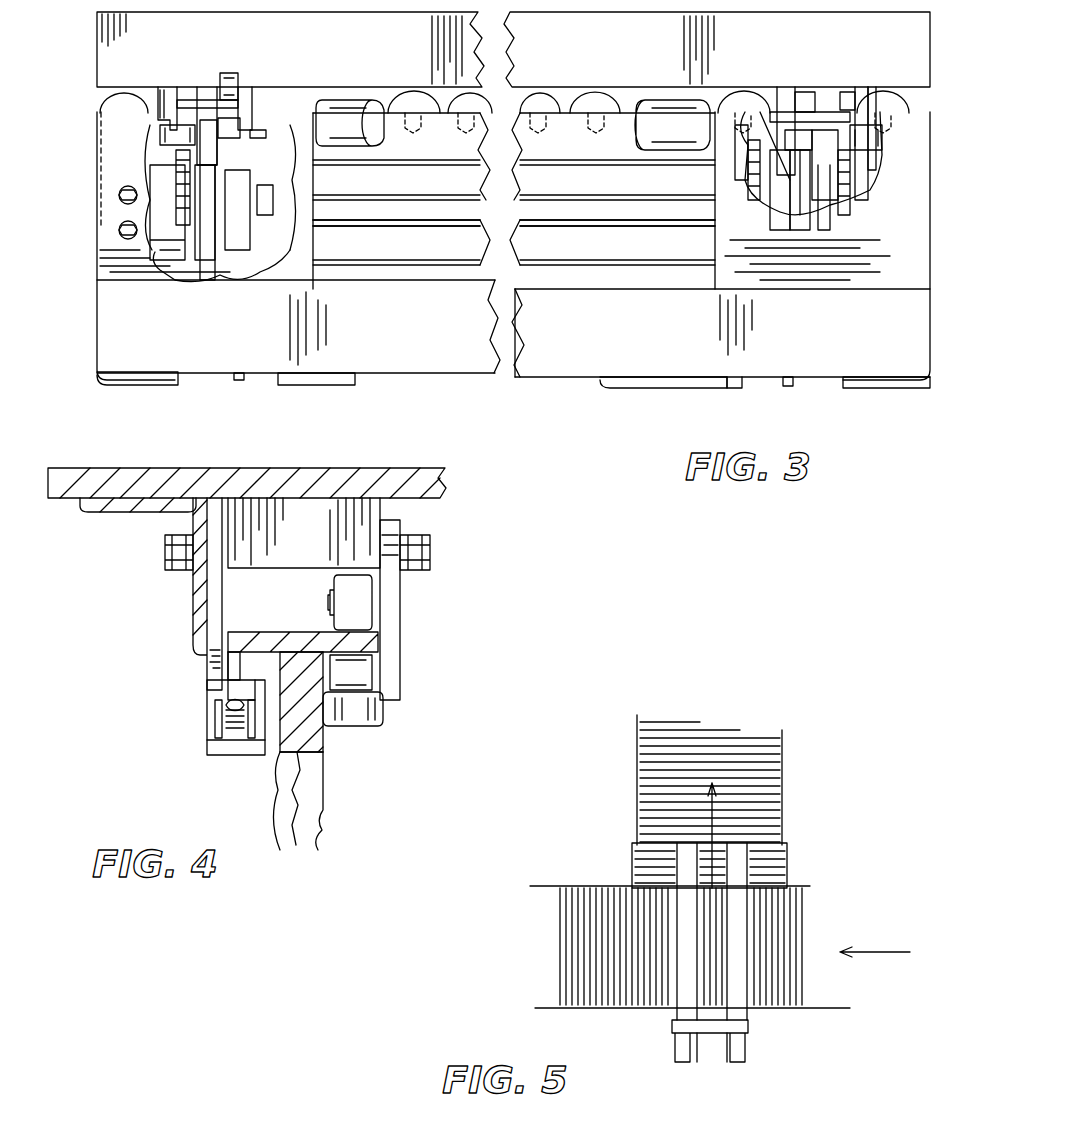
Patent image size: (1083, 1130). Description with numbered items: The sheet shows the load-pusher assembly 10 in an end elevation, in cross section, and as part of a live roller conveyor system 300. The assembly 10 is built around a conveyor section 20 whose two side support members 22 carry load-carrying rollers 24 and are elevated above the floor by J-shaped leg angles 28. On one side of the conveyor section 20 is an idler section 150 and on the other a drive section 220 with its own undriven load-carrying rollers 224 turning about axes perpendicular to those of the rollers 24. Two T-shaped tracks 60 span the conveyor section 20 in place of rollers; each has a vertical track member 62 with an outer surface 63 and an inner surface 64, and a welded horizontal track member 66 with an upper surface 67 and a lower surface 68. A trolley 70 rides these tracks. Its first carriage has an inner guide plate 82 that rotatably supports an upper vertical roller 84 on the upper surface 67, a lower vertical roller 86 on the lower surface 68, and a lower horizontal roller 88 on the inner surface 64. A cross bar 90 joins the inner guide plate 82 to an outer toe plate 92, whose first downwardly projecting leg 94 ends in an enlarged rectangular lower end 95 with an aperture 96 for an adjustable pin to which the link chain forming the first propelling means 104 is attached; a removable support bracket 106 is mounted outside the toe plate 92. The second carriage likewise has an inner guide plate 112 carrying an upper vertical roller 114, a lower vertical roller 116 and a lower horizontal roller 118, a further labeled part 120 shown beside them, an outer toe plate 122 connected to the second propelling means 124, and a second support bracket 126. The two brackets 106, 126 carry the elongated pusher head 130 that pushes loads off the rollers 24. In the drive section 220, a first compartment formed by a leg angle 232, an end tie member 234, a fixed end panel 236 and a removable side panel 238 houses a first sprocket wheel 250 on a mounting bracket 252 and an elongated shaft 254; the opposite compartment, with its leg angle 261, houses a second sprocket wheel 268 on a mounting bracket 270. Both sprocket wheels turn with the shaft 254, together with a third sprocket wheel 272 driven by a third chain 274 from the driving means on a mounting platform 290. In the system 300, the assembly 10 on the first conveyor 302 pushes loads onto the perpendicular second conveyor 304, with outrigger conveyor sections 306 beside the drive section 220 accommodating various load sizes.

In FIG. 5, the load-pusher assembly 10 is at (764, 936).
In FIG. 5, the conveyor section 20 is at (726, 966).
In FIG. 3, the side support members 22 is at (462, 146).
In FIG. 3, the load-carrying rollers 24 is at (414, 98).
In FIG. 3, the leg angles 28 is at (352, 386).
In FIG. 3, the tracks 60 is at (224, 150).
In FIG. 4, the tracks 60 is at (336, 756).
In FIG. 5, the tracks 60 is at (678, 1030).
In FIG. 3, the vertical track member 62 is at (207, 110).
In FIG. 4, the vertical track member 62 is at (310, 810).
In FIG. 4, the outer surface 63 is at (276, 800).
In FIG. 4, the inner surface 64 is at (326, 770).
In FIG. 3, the horizontal track member 66 is at (200, 96).
In FIG. 4, the horizontal track member 66 is at (368, 642).
In FIG. 4, the upper surface 67 is at (270, 633).
In FIG. 4, the lower surface 68 is at (270, 653).
In FIG. 3, the trolley 70 is at (104, 92).
In FIG. 4, the trolley 70 is at (168, 636).
In FIG. 5, the trolley 70 is at (716, 1047).
In FIG. 3, the inner guide plate 82 is at (252, 100).
In FIG. 4, the inner guide plate 82 is at (412, 628).
In FIG. 3, the upper vertical roller 84 is at (235, 80).
In FIG. 4, the upper vertical roller 84 is at (348, 598).
In FIG. 3, the lower vertical roller 86 is at (238, 128).
In FIG. 4, the lower vertical roller 86 is at (366, 672).
In FIG. 3, the lower horizontal roller 88 is at (264, 134).
In FIG. 4, the lower horizontal roller 88 is at (370, 716).
In FIG. 4, the cross bar 90 is at (318, 505).
In FIG. 3, the outer toe plate 92 is at (166, 100).
In FIG. 4, the outer toe plate 92 is at (203, 660).
In FIG. 3, the first downwardly projecting leg 94 is at (172, 132).
In FIG. 4, the first downwardly projecting leg 94 is at (216, 745).
In FIG. 4, the enlarged rectangular lower end 95 is at (225, 758).
In FIG. 4, the aperture 96 is at (232, 735).
In FIG. 3, the first propelling means 104 is at (170, 147).
In FIG. 4, the first propelling means 104 is at (215, 720).
In FIG. 3, the support bracket 106 is at (200, 95).
In FIG. 4, the support bracket 106 is at (190, 586).
In FIG. 3, the inner guide plate 112 is at (784, 110).
In FIG. 3, the upper vertical roller 114 is at (800, 90).
In FIG. 3, the lower vertical roller 116 is at (800, 132).
In FIG. 3, the lower horizontal roller 118 is at (790, 160).
In FIG. 3, the side bar 120 is at (865, 95).
In FIG. 3, the outer toe plate 122 is at (856, 120).
In FIG. 3, the second propelling means 124 is at (878, 140).
In FIG. 3, the second support bracket 126 is at (860, 100).
In FIG. 3, the pusher head 130 is at (580, 50).
In FIG. 4, the pusher head 130 is at (266, 478).
In FIG. 5, the idler section 150 is at (760, 1052).
In FIG. 5, the drive section 220 is at (760, 870).
In FIG. 3, the load-carrying rollers 224 is at (364, 104).
In FIG. 3, the leg angle 232 is at (168, 386).
In FIG. 3, the end tie member 234 is at (556, 380).
In FIG. 3, the fixed end panel 236 is at (126, 270).
In FIG. 3, the removable side panel 238 is at (98, 150).
In FIG. 3, the first sprocket wheel 250 is at (158, 260).
In FIG. 3, the mounting bracket 252 is at (248, 262).
In FIG. 3, the elongated shaft 254 is at (446, 225).
In FIG. 3, the leg angle 261 is at (910, 388).
In FIG. 3, the second sprocket wheel 268 is at (864, 190).
In FIG. 3, the mounting bracket 270 is at (790, 388).
In FIG. 3, the third sprocket wheel 272 is at (778, 124).
In FIG. 3, the third propelling means 274 is at (752, 165).
In FIG. 3, the mounting platform 290 is at (618, 390).
In FIG. 5, the live roller conveyor system 300 is at (800, 750).
In FIG. 5, the first conveyor 302 is at (600, 1012).
In FIG. 5, the second conveyor 304 is at (790, 778).
In FIG. 5, the outrigger conveyor sections 306 is at (650, 862).